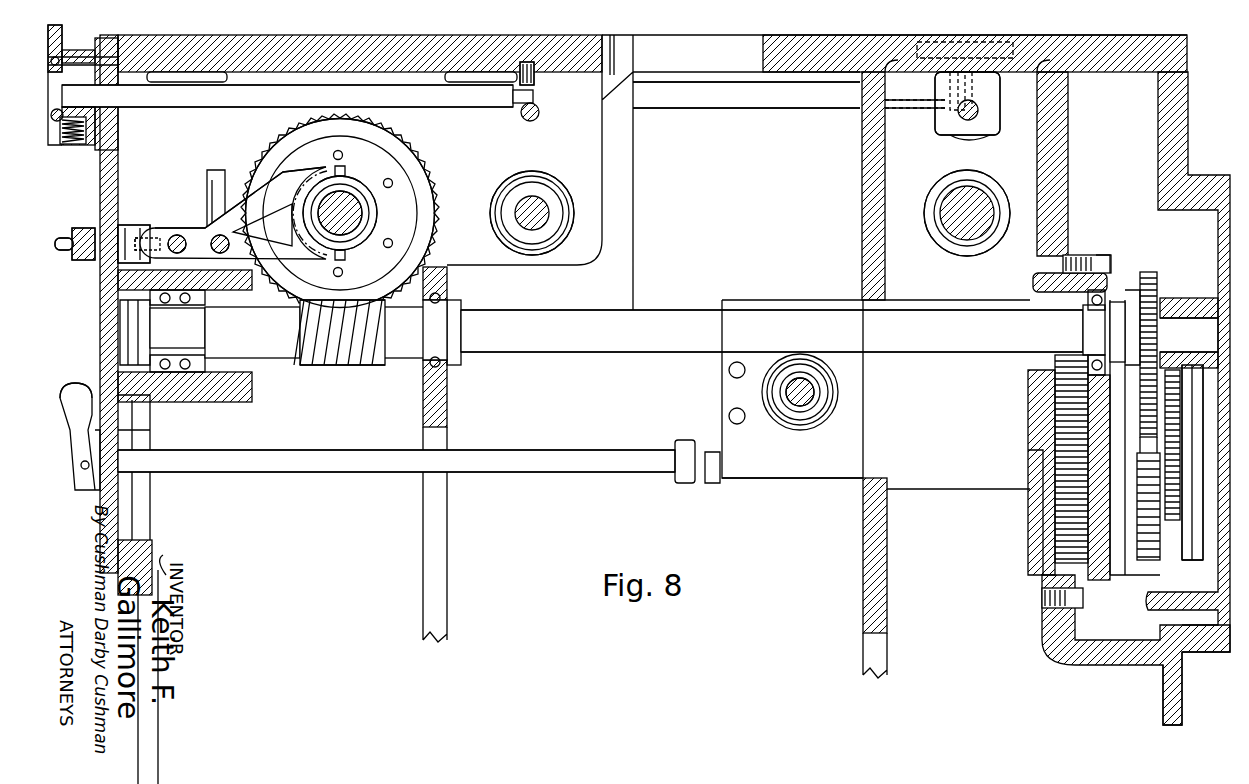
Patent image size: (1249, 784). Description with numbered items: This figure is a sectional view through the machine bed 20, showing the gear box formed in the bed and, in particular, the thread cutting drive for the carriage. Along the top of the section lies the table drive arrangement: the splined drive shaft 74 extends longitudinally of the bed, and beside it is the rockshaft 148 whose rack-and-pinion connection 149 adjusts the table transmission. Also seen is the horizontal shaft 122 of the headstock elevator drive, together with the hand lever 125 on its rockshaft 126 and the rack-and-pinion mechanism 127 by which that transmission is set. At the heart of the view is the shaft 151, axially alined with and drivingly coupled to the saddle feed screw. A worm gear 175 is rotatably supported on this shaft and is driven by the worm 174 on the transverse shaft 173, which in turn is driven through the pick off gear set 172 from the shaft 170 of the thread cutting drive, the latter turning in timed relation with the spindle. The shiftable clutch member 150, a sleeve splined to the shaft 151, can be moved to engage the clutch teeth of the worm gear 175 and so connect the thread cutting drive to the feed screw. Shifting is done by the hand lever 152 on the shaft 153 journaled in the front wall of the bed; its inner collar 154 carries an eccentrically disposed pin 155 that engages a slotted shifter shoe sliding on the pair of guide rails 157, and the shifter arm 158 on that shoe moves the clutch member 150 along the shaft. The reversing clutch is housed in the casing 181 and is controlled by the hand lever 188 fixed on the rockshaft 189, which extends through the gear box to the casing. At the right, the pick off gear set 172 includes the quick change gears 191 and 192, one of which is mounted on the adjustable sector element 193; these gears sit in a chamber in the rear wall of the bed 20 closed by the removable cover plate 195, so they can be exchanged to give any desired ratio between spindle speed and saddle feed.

The machine bed 20 is at (1170, 722).
The splined drive shaft 74 is at (960, 228).
The horizontal shaft 122 is at (538, 203).
The hand lever 125 is at (62, 38).
The rockshaft 126 is at (470, 106).
The rack-and-pinion mechanism 127 is at (548, 107).
The rockshaft 148 is at (782, 104).
The rack-and-pinion connection 149 is at (953, 127).
The shiftable clutch member 150 is at (358, 180).
The shaft 151 is at (345, 228).
The hand lever 152 is at (58, 248).
The shaft 153 is at (100, 230).
The collar 154 is at (135, 225).
The eccentrically disposed pin 155 is at (148, 238).
The guide rails 157 is at (218, 238).
The shifter arm 158 is at (278, 190).
The shaft 170 is at (814, 393).
The pick off gear set 172 is at (1153, 547).
The transverse shaft 173 is at (622, 355).
The worm 174 is at (328, 362).
The worm gear 175 is at (426, 188).
The casing 181 is at (783, 462).
The hand lever 188 is at (75, 388).
The rockshaft 189 is at (625, 468).
The quick change gear 191 is at (1202, 330).
The quick change gear 192 is at (1172, 522).
The sector element 193 is at (1200, 520).
The removable cover plate 195 is at (1213, 652).